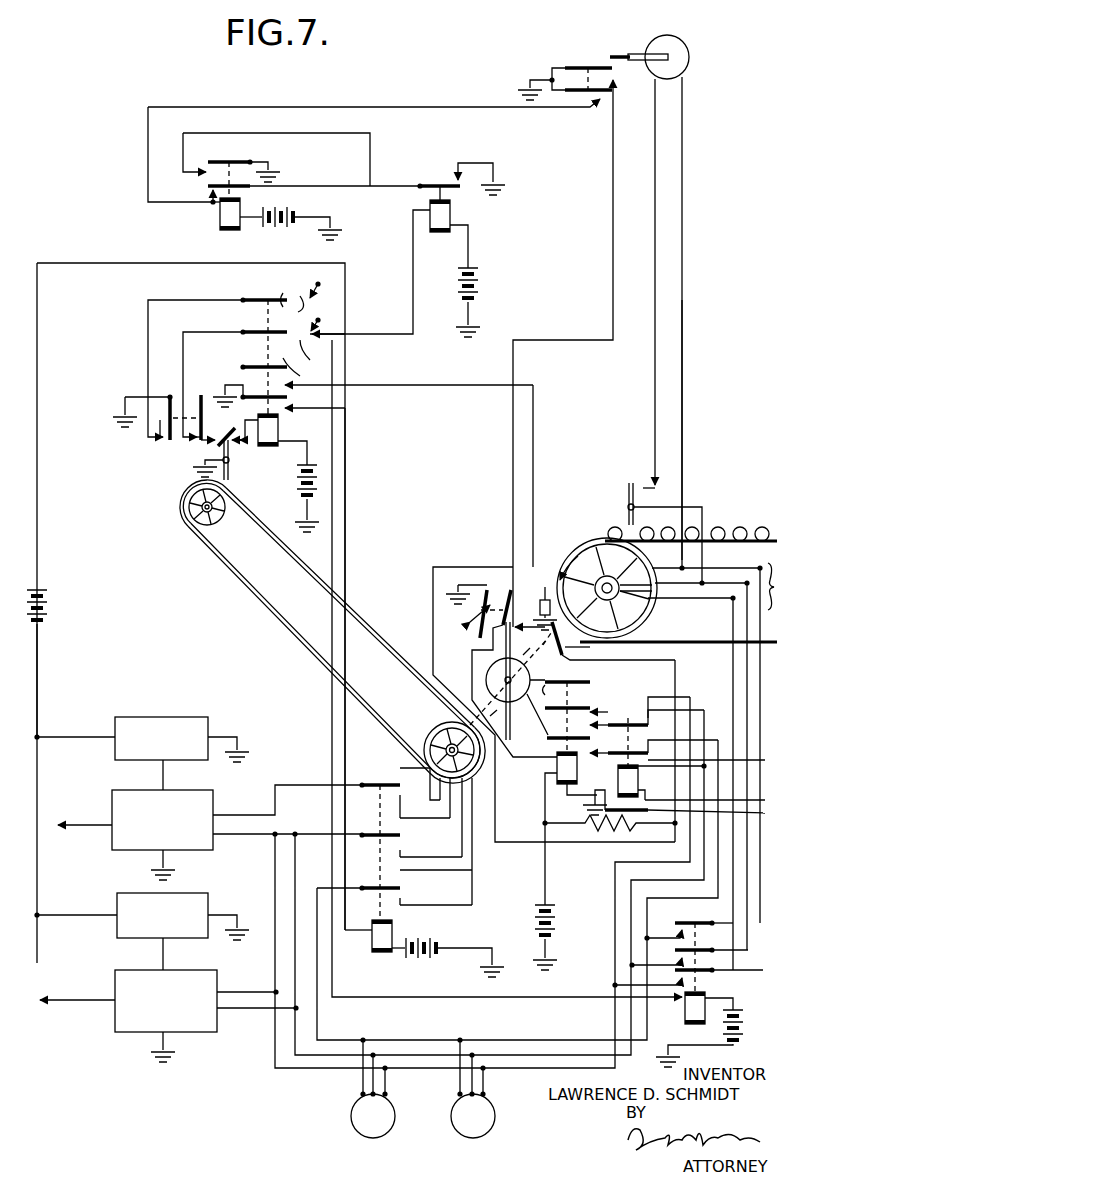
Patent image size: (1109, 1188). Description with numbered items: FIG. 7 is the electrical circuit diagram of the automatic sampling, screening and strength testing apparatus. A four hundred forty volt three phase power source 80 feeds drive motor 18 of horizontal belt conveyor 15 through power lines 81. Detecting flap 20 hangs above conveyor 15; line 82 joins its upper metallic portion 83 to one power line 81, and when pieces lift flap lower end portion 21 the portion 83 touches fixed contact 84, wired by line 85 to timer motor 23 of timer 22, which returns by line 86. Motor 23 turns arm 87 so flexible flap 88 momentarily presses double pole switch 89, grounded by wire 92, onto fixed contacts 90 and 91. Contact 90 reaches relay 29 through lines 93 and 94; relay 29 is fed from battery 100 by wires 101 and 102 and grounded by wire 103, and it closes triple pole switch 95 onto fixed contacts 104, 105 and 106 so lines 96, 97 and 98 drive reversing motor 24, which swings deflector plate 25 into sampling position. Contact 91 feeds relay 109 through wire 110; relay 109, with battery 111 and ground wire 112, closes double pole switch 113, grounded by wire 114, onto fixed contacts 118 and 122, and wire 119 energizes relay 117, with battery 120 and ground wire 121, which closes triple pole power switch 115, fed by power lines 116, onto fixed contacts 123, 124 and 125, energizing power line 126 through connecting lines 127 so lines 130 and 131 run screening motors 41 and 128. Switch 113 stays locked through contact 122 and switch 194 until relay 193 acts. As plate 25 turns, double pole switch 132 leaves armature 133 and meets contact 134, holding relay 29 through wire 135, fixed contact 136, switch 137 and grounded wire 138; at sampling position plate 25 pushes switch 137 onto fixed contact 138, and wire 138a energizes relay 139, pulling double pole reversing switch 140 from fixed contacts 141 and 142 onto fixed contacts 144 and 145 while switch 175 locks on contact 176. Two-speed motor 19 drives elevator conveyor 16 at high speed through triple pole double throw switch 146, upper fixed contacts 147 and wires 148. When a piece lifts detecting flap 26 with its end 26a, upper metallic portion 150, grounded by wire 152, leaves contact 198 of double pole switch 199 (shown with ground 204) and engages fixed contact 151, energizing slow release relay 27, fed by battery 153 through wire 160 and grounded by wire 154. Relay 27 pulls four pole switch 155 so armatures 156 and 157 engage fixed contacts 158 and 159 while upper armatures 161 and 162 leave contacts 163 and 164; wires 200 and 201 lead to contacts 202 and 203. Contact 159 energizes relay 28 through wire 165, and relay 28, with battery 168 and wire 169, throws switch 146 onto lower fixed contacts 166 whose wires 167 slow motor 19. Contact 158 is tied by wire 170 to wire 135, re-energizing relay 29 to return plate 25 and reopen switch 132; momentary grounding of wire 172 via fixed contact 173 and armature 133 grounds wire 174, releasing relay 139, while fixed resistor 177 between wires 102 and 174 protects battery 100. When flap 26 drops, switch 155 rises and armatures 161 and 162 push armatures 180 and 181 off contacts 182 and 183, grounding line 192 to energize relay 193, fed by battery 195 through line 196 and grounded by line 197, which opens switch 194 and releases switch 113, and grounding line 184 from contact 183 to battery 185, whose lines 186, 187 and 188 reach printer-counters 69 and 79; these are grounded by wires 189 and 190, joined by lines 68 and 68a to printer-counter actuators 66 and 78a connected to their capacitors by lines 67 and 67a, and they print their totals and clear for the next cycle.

The horizontal endless belt conveyor 15 is at (775, 540).
The inclined elevator belt conveyor 16 is at (298, 540).
The drive motor 18 is at (600, 545).
The two-speed motor 19 is at (431, 730).
The detecting flap 20 is at (627, 506).
The flap lower end portion 21 is at (628, 520).
The timer 22 is at (691, 50).
The timer motor 23 is at (684, 67).
The reversing motor 24 is at (486, 673).
The deflector plate 25 is at (514, 745).
The detecting flap 26 is at (230, 464).
The rod end 26a is at (230, 480).
The slow release relay 27 is at (279, 428).
The relay 28 is at (378, 958).
The relay 29 is at (579, 765).
The drive motor 41 is at (350, 1123).
The printer-counter actuator 66 is at (196, 795).
The line 67 is at (80, 823).
The line 67a is at (80, 1005).
The line 68 is at (160, 775).
The line 68a is at (165, 953).
The printer-counter 69 is at (158, 716).
The printer-counter actuator 78a is at (205, 1033).
The printer-counter 79 is at (197, 895).
The power source 80 is at (768, 603).
The power lines 81 is at (718, 580).
The line 82 is at (703, 520).
The upper metallic portion 83 is at (627, 495).
The fixed contact 84 is at (652, 484).
The line 85 is at (655, 258).
The line 86 is at (683, 258).
The arm 87 is at (640, 53).
The flexible flap 88 is at (621, 50).
The double pole switch 89 is at (580, 66).
The fixed contact 90 is at (618, 80).
The fixed contact 91 is at (596, 104).
The wire 92 is at (532, 86).
The line 93 is at (468, 566).
The line 94 is at (512, 448).
The triple pole switch 95 is at (588, 685).
The line 96 is at (547, 690).
The line 97 is at (546, 708).
The line 98 is at (545, 725).
The battery 100 is at (558, 903).
The wire 101 is at (543, 813).
The wire 102 is at (556, 898).
The wire 103 is at (543, 928).
The fixed contact 104 is at (609, 705).
The fixed contact 105 is at (609, 718).
The fixed contact 106 is at (609, 742).
The relay 109 is at (222, 216).
The wire 110 is at (146, 125).
The battery 111 is at (282, 222).
The wire 112 is at (322, 226).
The double pole switch 113 is at (222, 160).
The wire 114 is at (268, 168).
The triple pole power switch 115 is at (704, 946).
The power lines 116 is at (748, 930).
The relay 117 is at (684, 1010).
The fixed contact 118 is at (200, 172).
The wire 119 is at (540, 998).
The battery 120 is at (746, 1023).
The wire 121 is at (666, 1054).
The contact 122 is at (208, 189).
The fixed contact 123 is at (676, 935).
The fixed contact 124 is at (690, 960).
The fixed contact 125 is at (690, 980).
The power line 126 is at (268, 885).
The connecting lines 127 is at (604, 975).
The drive motor 128 is at (462, 1126).
The lines 130 is at (362, 1083).
The lines 131 is at (486, 1085).
The double pole switch 132 is at (478, 592).
The armature 133 is at (470, 627).
The contact 134 is at (513, 565).
The wire 135 is at (607, 603).
The fixed contact 136 is at (557, 648).
The switch 137 is at (596, 652).
The fixed contact 138 is at (545, 586).
The wire 138a is at (677, 660).
The relay 139 is at (617, 780).
The double pole reversing switch 140 is at (640, 718).
The fixed contact 141 is at (648, 735).
The fixed contact 142 is at (648, 748).
The fixed contact 144 is at (648, 720).
The fixed contact 145 is at (717, 760).
The triple pole double throw switch 146 is at (372, 783).
The upper fixed contacts 147 is at (401, 782).
The wires 148 is at (412, 768).
The upper metallic portion 150 is at (268, 410).
The fixed contact 151 is at (235, 443).
The wire 152 is at (200, 467).
The battery 153 is at (310, 483).
The wire 154 is at (309, 515).
The four pole switch 155 is at (252, 298).
The armature 156 is at (253, 366).
The bottom armature 157 is at (289, 396).
The fixed contact 158 is at (289, 374).
The fixed contact 159 is at (315, 408).
The wire 160 is at (308, 445).
The upper armature 161 is at (262, 331).
The upper armature 162 is at (280, 292).
The contact 163 is at (285, 357).
The contact 164 is at (305, 317).
The wire 165 is at (347, 560).
The lower fixed contacts 166 is at (401, 796).
The wires 167 is at (400, 800).
The battery 168 is at (446, 952).
The wire 169 is at (410, 955).
The wire 170 is at (535, 448).
The wire 172 is at (455, 590).
The fixed contact 173 is at (505, 592).
The wire 174 is at (488, 683).
The switch 175 is at (701, 815).
The fixed contact 176 is at (721, 800).
The fixed resistor 177 is at (592, 830).
The armature 180 is at (319, 352).
The armature 181 is at (322, 280).
The contact 182 is at (336, 331).
The contact 183 is at (312, 300).
The line 184 is at (38, 473).
The battery 185 is at (50, 612).
The line 186 is at (39, 685).
The line 187 is at (78, 735).
The line 188 is at (80, 914).
The wire 189 is at (237, 742).
The wire 190 is at (238, 922).
The line 192 is at (399, 337).
The relay 193 is at (452, 212).
The switch 194 is at (428, 184).
The battery 195 is at (480, 283).
The line 196 is at (469, 245).
The line 197 is at (470, 317).
The contact 198 is at (232, 420).
The double pole switch 199 is at (172, 398).
The wire 200 is at (186, 298).
The wire 201 is at (193, 330).
The contact 202 is at (199, 440).
The contact 203 is at (165, 440).
The ground 204 is at (123, 405).